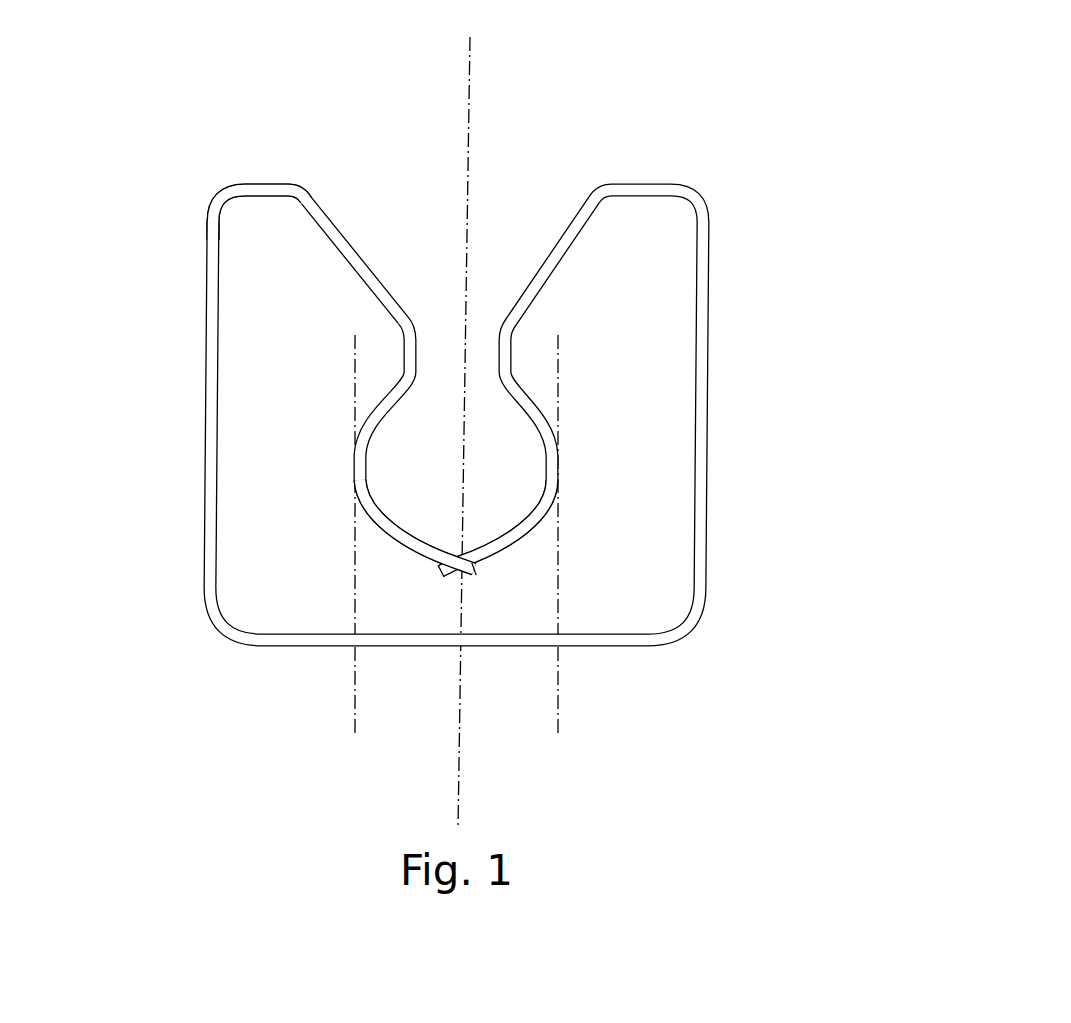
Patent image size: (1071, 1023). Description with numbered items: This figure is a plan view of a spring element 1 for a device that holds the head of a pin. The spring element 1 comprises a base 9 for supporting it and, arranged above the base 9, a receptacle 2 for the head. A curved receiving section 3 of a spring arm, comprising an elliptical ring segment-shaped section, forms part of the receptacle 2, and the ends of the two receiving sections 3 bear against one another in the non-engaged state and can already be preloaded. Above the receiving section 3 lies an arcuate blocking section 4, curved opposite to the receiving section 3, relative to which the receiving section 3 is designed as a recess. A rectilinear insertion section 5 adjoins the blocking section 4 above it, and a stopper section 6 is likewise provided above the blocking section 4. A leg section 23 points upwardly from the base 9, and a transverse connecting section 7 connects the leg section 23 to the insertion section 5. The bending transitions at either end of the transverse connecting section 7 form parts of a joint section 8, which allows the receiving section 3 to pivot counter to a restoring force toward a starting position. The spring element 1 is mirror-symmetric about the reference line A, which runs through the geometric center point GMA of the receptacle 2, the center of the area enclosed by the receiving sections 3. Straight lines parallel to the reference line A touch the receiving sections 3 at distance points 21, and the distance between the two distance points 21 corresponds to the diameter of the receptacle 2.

The spring element 1 is at (427, 371).
The receptacle 2 is at (477, 486).
The receiving section 3 is at (386, 528).
The blocking section 4 is at (414, 340).
The insertion section 5 is at (378, 256).
The stopper section 6 is at (285, 183).
The transverse connecting section 7 is at (271, 183).
The joint section 8 is at (271, 124).
The base 9 is at (304, 647).
The distance point 21 is at (350, 464).
The leg section 23 is at (207, 397).
The reference line A is at (468, 418).
The geometric center point of the receptacle GMA is at (463, 486).